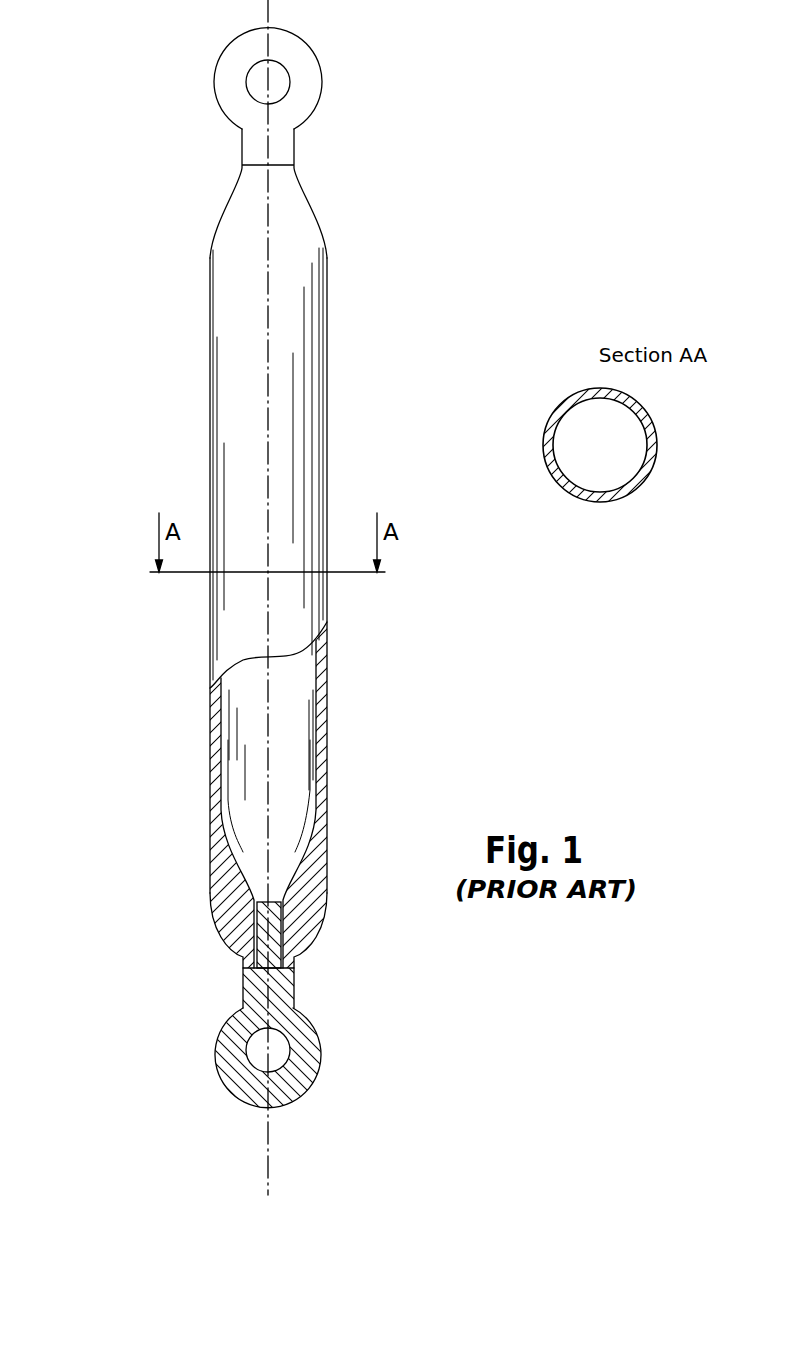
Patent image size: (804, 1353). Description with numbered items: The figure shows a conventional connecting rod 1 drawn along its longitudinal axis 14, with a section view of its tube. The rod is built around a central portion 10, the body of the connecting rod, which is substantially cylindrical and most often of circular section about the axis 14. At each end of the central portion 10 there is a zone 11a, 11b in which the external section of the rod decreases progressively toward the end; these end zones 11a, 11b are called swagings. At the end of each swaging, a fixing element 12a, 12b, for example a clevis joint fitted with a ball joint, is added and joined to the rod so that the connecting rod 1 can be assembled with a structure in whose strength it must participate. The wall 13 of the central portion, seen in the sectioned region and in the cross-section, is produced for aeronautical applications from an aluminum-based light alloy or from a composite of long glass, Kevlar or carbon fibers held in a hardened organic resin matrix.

The connecting rod 1 is at (143, 216).
The central portion 10 is at (286, 313).
The swaging 11a is at (322, 929).
The swaging 11b is at (322, 203).
The fixing element 12a is at (293, 1072).
The fixing element 12b is at (292, 108).
The wall 13 is at (325, 681).
The axis 14 is at (268, 1158).